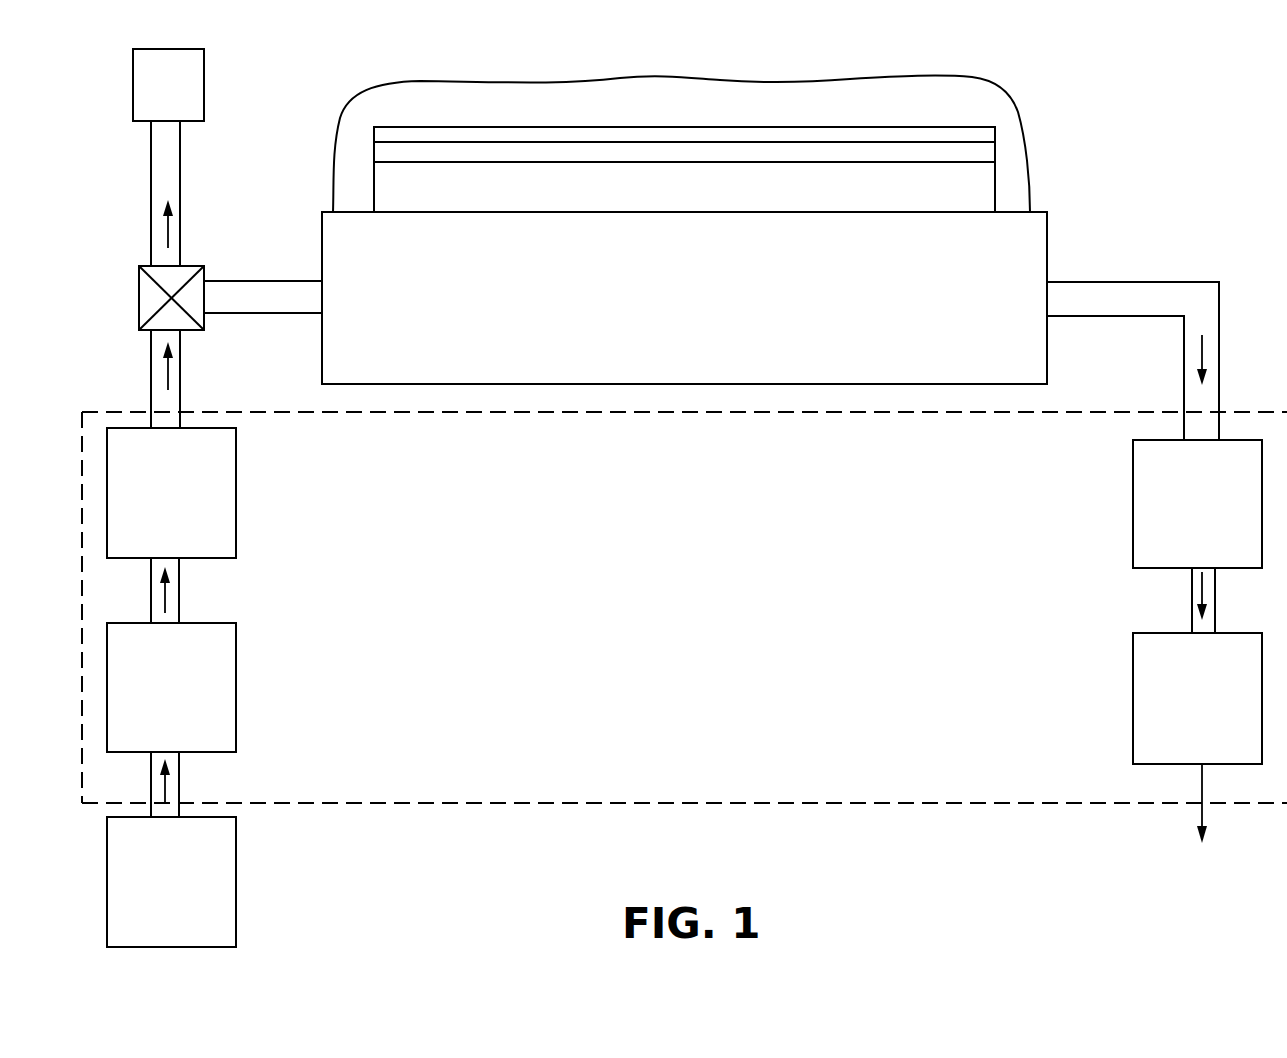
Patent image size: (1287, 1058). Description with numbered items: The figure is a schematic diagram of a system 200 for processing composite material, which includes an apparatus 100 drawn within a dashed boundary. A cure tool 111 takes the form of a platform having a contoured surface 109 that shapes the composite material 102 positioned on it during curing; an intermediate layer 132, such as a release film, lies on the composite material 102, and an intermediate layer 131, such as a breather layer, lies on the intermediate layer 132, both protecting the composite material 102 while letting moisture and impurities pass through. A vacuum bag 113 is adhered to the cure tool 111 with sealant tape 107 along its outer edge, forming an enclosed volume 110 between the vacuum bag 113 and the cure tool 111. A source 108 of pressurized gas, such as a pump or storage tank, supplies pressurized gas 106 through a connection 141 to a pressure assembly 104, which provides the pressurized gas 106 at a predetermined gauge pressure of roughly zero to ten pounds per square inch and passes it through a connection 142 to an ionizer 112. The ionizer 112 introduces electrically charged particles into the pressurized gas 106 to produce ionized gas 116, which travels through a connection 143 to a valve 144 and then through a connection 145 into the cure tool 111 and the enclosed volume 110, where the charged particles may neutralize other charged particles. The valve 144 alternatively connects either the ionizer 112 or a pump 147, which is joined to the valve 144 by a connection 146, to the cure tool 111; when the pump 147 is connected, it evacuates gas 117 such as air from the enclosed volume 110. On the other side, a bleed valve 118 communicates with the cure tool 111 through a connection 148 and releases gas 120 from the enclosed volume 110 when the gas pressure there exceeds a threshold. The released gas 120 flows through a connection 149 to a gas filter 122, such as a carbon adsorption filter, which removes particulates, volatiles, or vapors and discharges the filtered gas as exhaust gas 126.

The apparatus 100 is at (882, 803).
The composite material 102 is at (658, 206).
The pressure assembly 104 is at (146, 702).
The pressurized gas 106 is at (178, 599).
The sealant tape 107 is at (320, 206).
The source of pressurized gas 108 is at (146, 891).
The contoured surface 109 is at (1012, 212).
The enclosed volume 110 is at (356, 162).
The cure tool 111 is at (658, 321).
The ionizer 112 is at (146, 504).
The vacuum bag 113 is at (1005, 84).
The ionized gas 116 is at (170, 373).
The gas 117 is at (170, 230).
The bleed valve 118 is at (1174, 516).
The gas 120 is at (1204, 357).
The gas filter 122 is at (1176, 712).
The exhaust gas 126 is at (1205, 773).
The intermediate layer 131 is at (980, 135).
The intermediate layer 132 is at (985, 156).
The connection 141 is at (151, 769).
The connection 142 is at (151, 590).
The connection 143 is at (150, 368).
The valve 144 is at (150, 296).
The connection 145 is at (268, 315).
The connection 146 is at (150, 152).
The pump 147 is at (146, 94).
The connection 148 is at (1184, 335).
The connection 149 is at (1192, 587).
The system 200 is at (1185, 88).